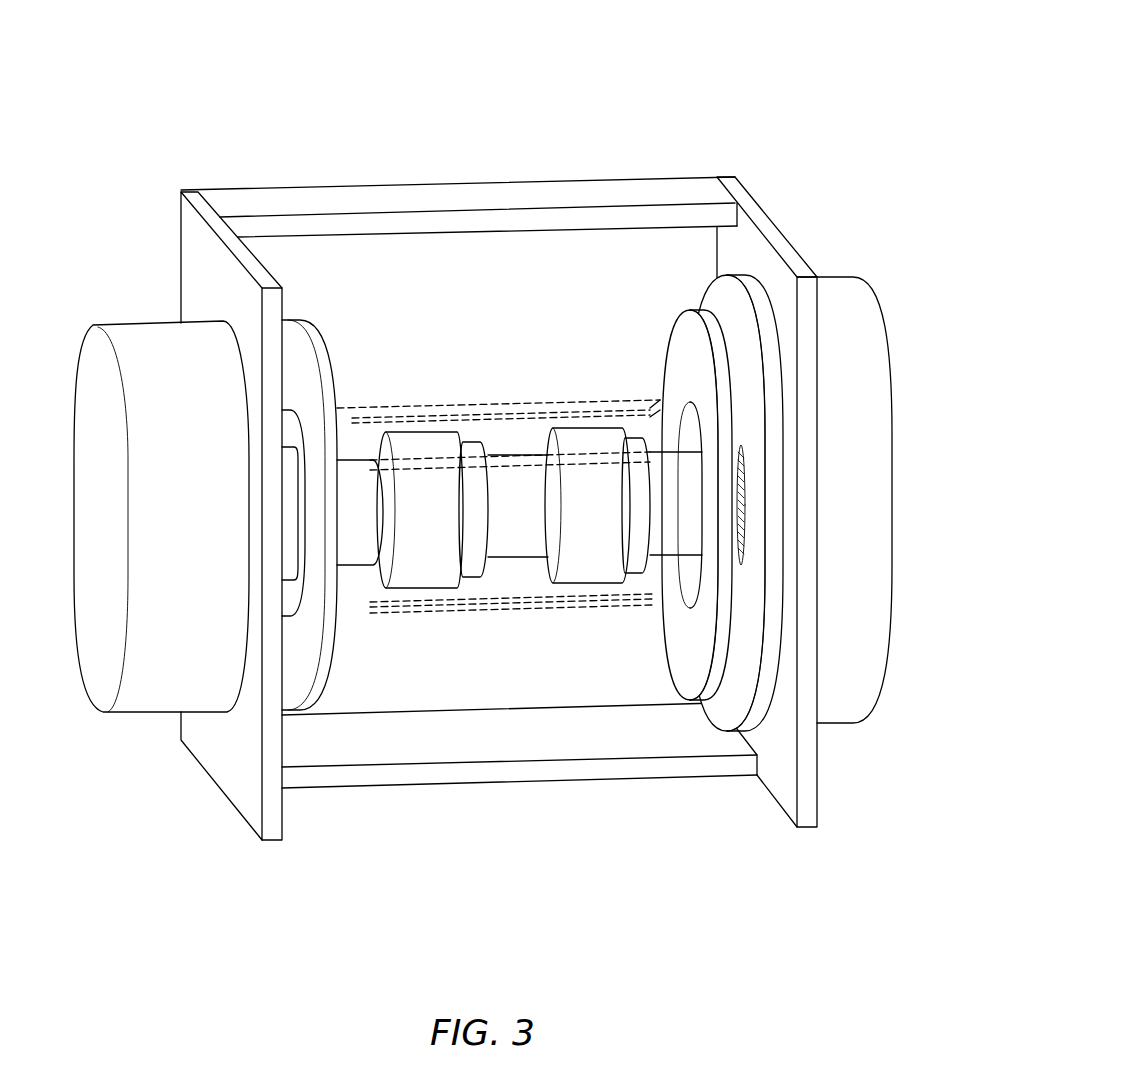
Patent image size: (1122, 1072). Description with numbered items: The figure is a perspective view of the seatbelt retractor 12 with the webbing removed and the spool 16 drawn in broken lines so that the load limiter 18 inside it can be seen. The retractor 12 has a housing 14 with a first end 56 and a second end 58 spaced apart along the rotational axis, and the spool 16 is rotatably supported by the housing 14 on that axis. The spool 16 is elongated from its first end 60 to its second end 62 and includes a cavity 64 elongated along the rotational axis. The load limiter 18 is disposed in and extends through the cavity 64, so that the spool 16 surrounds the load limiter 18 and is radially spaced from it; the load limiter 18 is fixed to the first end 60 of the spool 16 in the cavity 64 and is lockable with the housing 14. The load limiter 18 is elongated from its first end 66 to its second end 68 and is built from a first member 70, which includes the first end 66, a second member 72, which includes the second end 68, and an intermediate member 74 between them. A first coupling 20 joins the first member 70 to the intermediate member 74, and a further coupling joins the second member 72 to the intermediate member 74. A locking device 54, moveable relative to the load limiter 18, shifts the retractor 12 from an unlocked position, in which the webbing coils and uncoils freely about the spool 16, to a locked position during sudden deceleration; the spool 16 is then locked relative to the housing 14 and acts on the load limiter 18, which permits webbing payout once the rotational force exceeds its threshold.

The seatbelt retractor 12 is at (738, 88).
The housing 14 is at (243, 792).
The spool 16 is at (643, 608).
The load limiter 18 is at (473, 578).
The first coupling 20 is at (423, 417).
The locking device 54 is at (140, 717).
The first end 56 is at (185, 175).
The second end 58 is at (787, 190).
The first end 60 is at (302, 297).
The second end 62 is at (688, 283).
The cavity 64 is at (653, 418).
The first end 66 is at (352, 573).
The second end 68 is at (680, 573).
The first member 70 is at (355, 480).
The second member 72 is at (688, 490).
The intermediate member 74 is at (512, 475).